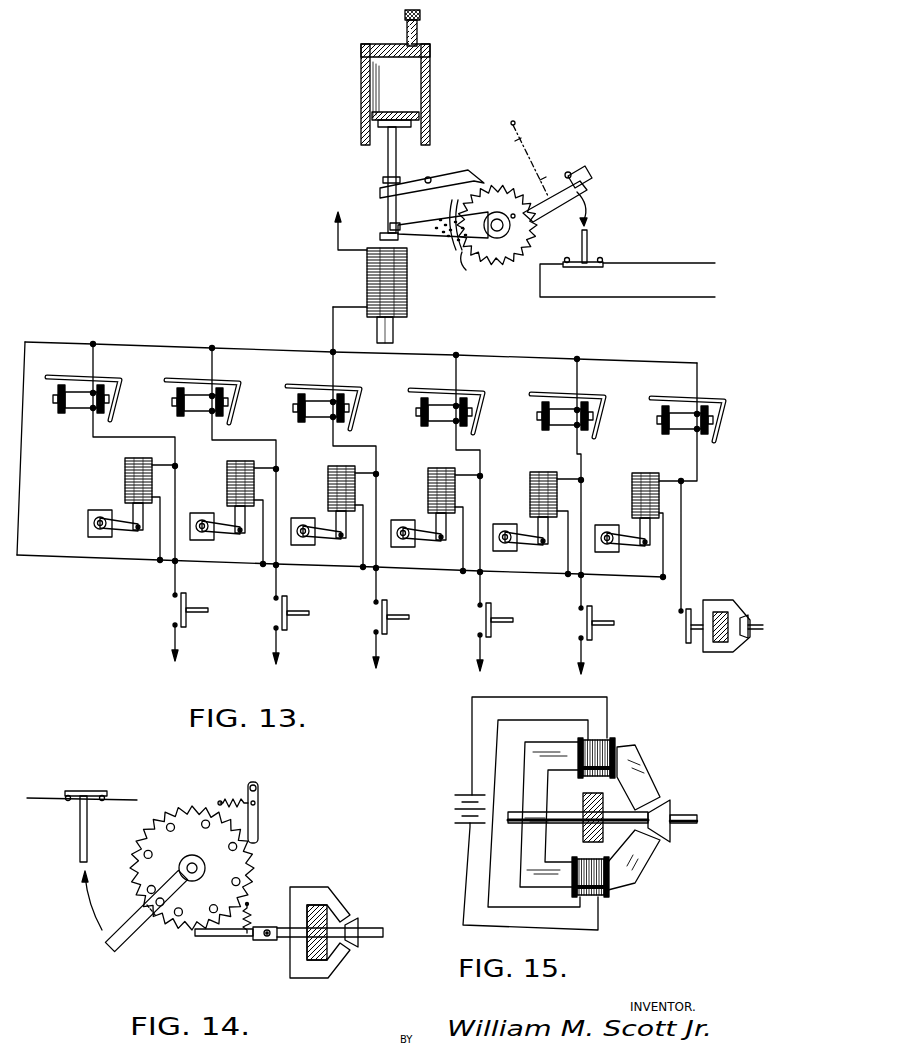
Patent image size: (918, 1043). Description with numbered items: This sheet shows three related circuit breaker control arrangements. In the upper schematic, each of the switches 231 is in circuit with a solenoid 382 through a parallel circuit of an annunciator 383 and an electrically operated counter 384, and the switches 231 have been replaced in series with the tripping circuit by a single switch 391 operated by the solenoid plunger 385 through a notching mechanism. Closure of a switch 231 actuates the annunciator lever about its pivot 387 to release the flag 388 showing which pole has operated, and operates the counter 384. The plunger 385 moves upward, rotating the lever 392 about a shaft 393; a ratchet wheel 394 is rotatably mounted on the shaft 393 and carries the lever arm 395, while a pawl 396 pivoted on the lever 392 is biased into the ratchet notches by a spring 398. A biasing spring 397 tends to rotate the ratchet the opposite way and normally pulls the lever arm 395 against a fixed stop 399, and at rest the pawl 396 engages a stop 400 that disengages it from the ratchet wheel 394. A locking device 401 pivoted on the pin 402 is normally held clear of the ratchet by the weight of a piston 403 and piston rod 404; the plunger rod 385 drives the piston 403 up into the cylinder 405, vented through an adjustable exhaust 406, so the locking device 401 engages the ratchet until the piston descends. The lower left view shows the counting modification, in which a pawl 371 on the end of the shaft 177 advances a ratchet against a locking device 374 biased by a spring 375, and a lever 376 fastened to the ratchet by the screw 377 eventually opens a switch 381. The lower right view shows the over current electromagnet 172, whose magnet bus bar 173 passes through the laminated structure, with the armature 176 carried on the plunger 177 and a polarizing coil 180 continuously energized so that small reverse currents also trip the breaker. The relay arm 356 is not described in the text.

In FIG. 13, the electromagnet 172 is at (723, 652).
In FIG. 14, the electromagnet 172 is at (323, 973).
In FIG. 15, the electromagnet 172 is at (633, 889).
In FIG. 13, the magnet bus bar 173 is at (722, 612).
In FIG. 14, the magnet bus bar 173 is at (313, 905).
In FIG. 15, the magnet bus bar 173 is at (597, 793).
In FIG. 13, the armature 176 is at (748, 618).
In FIG. 14, the armature 176 is at (358, 922).
In FIG. 15, the armature 176 is at (672, 806).
In FIG. 14, the plunger 177 is at (384, 932).
In FIG. 15, the plunger 177 is at (698, 819).
In FIG. 15, the polarizing coil 180 is at (598, 738).
In FIG. 13, the switch 231 is at (181, 612).
In FIG. 13, the relay arm 356 is at (673, 400).
In FIG. 14, the pawl 371 is at (228, 938).
In FIG. 14, the locking device 374 is at (258, 821).
In FIG. 14, the spring 375 is at (238, 790).
In FIG. 14, the lever 376 is at (118, 945).
In FIG. 14, the screw 377 is at (153, 900).
In FIG. 14, the switch 381 is at (92, 784).
In FIG. 13, the solenoid 382 is at (407, 300).
In FIG. 13, the annunciator 383 is at (680, 427).
In FIG. 13, the electrically operated counter 384 is at (642, 474).
In FIG. 13, the solenoid plunger 385 is at (393, 327).
In FIG. 13, the pivot 387 is at (652, 399).
In FIG. 13, the flag 388 is at (714, 424).
In FIG. 13, the switch 391 is at (583, 268).
In FIG. 13, the lever 392 is at (420, 227).
In FIG. 13, the shaft 393 is at (498, 219).
In FIG. 13, the ratchet wheel 394 is at (531, 229).
In FIG. 13, the lever arm 395 is at (590, 181).
In FIG. 13, the pawl 396 is at (462, 258).
In FIG. 13, the biasing spring 397 is at (537, 158).
In FIG. 13, the spring 398 is at (450, 240).
In FIG. 13, the fixed stop 399 is at (569, 173).
In FIG. 13, the stop 400 is at (455, 250).
In FIG. 13, the locking device 401 is at (466, 175).
In FIG. 13, the pin 402 is at (428, 177).
In FIG. 13, the piston 403 is at (410, 114).
In FIG. 13, the piston rod 404 is at (388, 162).
In FIG. 13, the cylinder 405 is at (412, 70).
In FIG. 13, the adjustable exhaust 406 is at (430, 48).